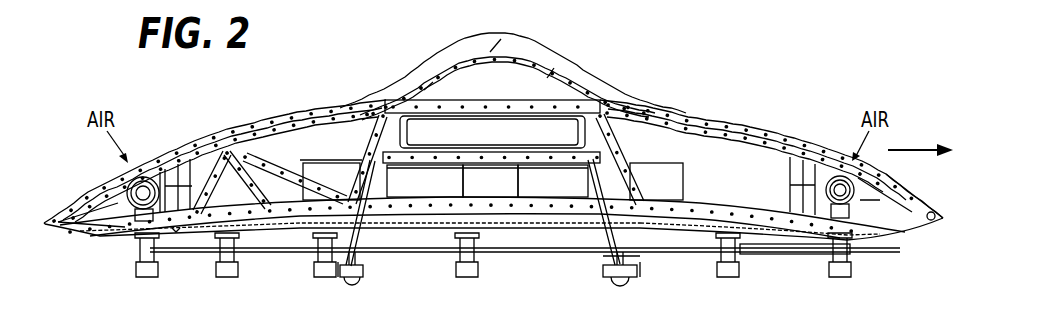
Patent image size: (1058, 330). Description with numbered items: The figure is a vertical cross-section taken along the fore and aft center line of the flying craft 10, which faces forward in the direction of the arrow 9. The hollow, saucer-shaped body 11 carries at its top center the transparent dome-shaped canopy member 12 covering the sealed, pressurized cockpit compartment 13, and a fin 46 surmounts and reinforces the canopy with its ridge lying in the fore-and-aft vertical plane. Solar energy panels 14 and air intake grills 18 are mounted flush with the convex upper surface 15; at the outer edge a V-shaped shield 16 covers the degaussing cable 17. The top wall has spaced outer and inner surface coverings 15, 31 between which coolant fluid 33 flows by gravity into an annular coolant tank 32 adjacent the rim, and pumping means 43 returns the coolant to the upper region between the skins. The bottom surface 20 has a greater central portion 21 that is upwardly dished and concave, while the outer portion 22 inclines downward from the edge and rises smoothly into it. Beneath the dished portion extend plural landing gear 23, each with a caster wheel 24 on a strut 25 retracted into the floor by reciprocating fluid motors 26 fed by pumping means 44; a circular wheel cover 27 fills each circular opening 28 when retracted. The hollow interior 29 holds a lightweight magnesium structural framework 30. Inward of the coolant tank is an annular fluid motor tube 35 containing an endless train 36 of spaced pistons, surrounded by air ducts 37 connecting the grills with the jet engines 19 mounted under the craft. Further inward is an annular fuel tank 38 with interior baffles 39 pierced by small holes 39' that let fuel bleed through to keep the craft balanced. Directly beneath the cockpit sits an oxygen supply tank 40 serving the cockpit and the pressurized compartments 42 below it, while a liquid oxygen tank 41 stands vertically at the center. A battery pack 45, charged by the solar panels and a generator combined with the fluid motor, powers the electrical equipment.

The arrow 9 is at (926, 149).
The flying craft 10 is at (747, 83).
The saucer-shaped body 11 is at (906, 200).
The dome-shaped canopy member 12 is at (551, 82).
The cockpit compartment 13 is at (467, 82).
The solar energy panels 14 is at (287, 120).
The upper surface 15 is at (230, 142).
The V-shaped shield 16 is at (938, 212).
The degaussing cable 17 is at (935, 223).
The air intake grills 18 is at (140, 177).
The jet engines 19 is at (137, 273).
The bottom surface 20 is at (698, 249).
The central portion 21 is at (440, 251).
The outer portion 22 is at (80, 240).
The landing gear 23 is at (365, 274).
The caster wheel 24 is at (352, 287).
The strut 25 is at (630, 256).
The reciprocating fluid motors 26 is at (359, 194).
The circular wheel cover 27 is at (337, 280).
The circular opening 28 is at (369, 249).
The hollow interior 29 is at (300, 124).
The structural framework 30 is at (710, 147).
The inner surface covering 31 is at (664, 117).
The annular coolant tank 32 is at (105, 195).
The coolant fluid 33 is at (870, 195).
The annular fluid motor tube 35 is at (834, 164).
The endless train of spaced pistons 36 is at (872, 239).
The air ducts 37 is at (130, 236).
The annular fuel tank 38 is at (200, 142).
The baffles 39 is at (169, 159).
The small holes 39' is at (181, 262).
The oxygen supply tank 40 is at (491, 131).
The liquid oxygen tank 41 is at (490, 181).
The pressurized compartments 42 is at (487, 181).
The pumping means 43 is at (336, 162).
The pumping means 44 is at (377, 150).
The battery pack 45 is at (652, 163).
The fin 46 is at (509, 47).